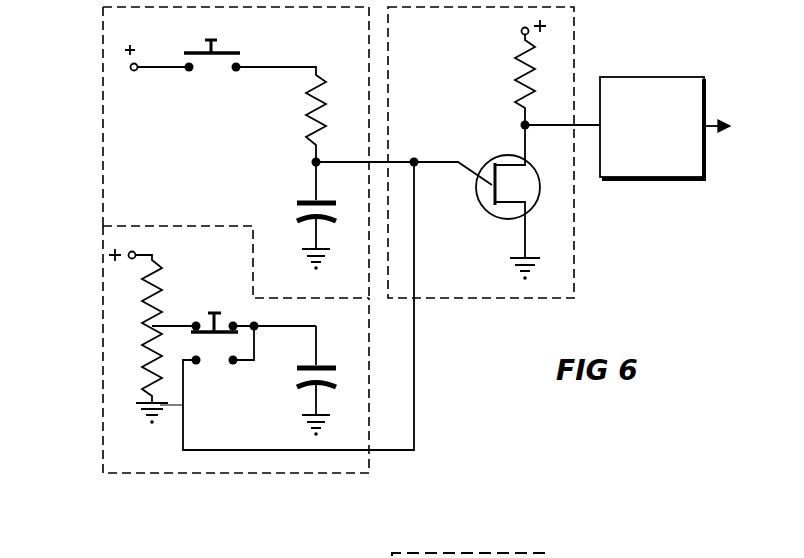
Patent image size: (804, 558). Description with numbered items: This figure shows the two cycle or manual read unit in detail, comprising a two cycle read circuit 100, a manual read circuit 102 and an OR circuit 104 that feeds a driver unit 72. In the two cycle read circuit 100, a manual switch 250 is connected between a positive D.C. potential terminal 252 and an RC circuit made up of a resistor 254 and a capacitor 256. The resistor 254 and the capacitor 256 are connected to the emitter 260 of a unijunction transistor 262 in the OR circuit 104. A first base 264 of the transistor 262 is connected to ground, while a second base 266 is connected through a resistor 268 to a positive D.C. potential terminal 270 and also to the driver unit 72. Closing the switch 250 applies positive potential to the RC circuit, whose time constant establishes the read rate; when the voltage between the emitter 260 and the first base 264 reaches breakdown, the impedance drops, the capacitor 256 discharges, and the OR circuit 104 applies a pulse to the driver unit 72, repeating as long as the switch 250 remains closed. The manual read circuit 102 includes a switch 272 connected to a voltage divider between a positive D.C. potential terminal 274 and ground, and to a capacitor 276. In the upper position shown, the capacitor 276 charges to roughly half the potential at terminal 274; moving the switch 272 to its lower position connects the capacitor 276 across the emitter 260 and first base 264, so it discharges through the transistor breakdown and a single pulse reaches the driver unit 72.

The driver unit 72 is at (663, 78).
The two cycle read circuit 100 is at (103, 128).
The manual read circuit 102 is at (103, 322).
The OR circuit 104 is at (575, 48).
The manual switch 250 is at (206, 49).
The positive D.C. potential terminal 252 is at (134, 71).
The resistor 254 is at (309, 102).
The capacitor 256 is at (307, 196).
The emitter 260 is at (468, 169).
The unijunction transistor 262 is at (490, 168).
The first base 264 is at (525, 232).
The second base 266 is at (527, 148).
The resistor 268 is at (516, 91).
The positive D.C. potential terminal 270 is at (521, 32).
The switch 272 is at (220, 311).
The positive D.C. potential terminal 274 is at (134, 251).
The capacitor 276 is at (326, 363).